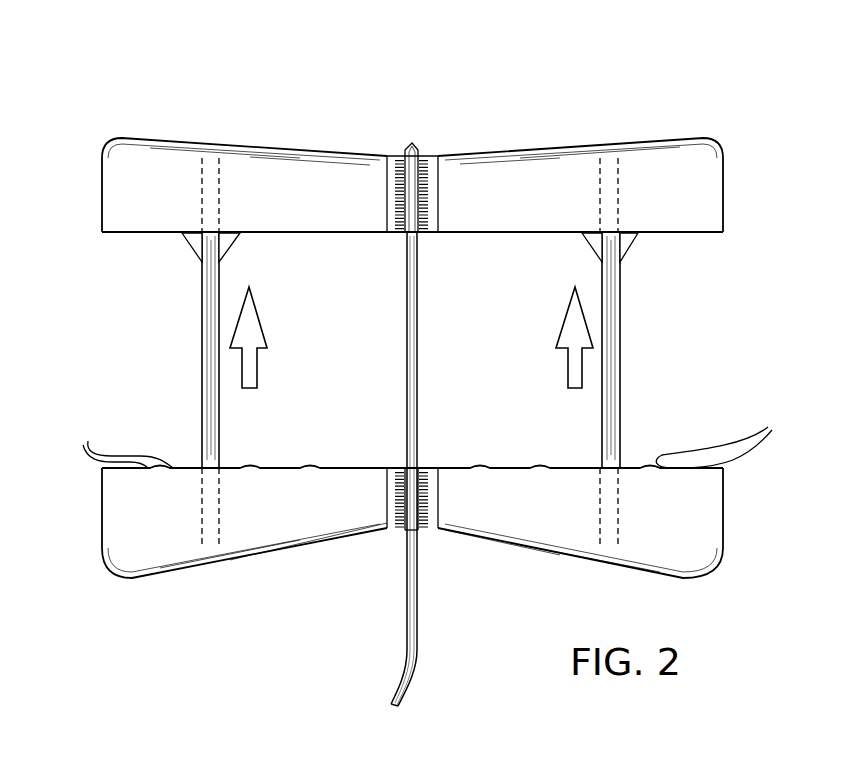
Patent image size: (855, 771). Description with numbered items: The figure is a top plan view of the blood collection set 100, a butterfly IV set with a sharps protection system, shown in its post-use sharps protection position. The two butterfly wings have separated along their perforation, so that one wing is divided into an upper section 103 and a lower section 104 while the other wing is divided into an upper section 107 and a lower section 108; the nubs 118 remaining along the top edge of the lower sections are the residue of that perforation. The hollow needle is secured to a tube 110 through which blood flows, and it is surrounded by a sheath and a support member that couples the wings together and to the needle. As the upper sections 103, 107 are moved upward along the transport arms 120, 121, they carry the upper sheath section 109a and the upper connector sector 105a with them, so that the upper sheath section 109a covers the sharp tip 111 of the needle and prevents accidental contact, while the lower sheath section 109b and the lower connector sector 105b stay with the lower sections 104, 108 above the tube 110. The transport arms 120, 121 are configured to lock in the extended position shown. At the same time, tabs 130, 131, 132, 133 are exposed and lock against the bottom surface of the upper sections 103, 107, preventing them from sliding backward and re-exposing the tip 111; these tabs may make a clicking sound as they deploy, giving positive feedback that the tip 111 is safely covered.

The blood collection set 100 is at (78, 186).
The upper section of wing 103 is at (698, 167).
The lower section of wing 104 is at (703, 518).
The upper connector sector 105a is at (448, 165).
The lower connector sector 105b is at (432, 500).
The upper section of wing 107 is at (140, 165).
The lower section of wing 108 is at (130, 540).
The upper sheath section 109a is at (402, 153).
The lower sheath section 109b is at (413, 510).
The tube 110 is at (403, 676).
The sharp tip 111 is at (412, 150).
The nubs 118 is at (426, 433).
The transport arm 120 is at (620, 405).
The transport arm 121 is at (202, 393).
The tab 130 is at (627, 252).
The tab 131 is at (587, 247).
The tab 132 is at (193, 250).
The tab 133 is at (228, 250).